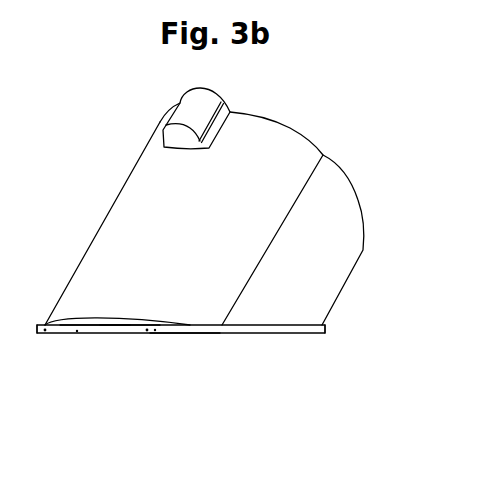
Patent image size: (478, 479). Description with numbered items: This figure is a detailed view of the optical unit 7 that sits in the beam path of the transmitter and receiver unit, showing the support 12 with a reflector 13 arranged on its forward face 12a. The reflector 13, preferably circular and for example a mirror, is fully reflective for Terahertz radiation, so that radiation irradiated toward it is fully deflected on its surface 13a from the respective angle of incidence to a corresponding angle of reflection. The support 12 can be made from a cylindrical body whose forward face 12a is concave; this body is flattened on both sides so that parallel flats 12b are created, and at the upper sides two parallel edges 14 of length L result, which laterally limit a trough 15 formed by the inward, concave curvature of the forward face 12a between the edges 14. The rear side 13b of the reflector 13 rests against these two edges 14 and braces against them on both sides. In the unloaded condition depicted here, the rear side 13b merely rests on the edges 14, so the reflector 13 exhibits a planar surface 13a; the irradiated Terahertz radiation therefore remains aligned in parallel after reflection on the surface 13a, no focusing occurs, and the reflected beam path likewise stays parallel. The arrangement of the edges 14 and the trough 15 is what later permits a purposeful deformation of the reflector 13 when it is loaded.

The optical unit 7 is at (291, 130).
The support 12 is at (147, 167).
The forward face 12a is at (125, 324).
The parallel flats 12b is at (330, 189).
The reflector 13 is at (265, 334).
The surface 13a is at (180, 335).
The rear side 13b is at (91, 321).
The edges 14 is at (77, 335).
The trough 15 is at (97, 325).